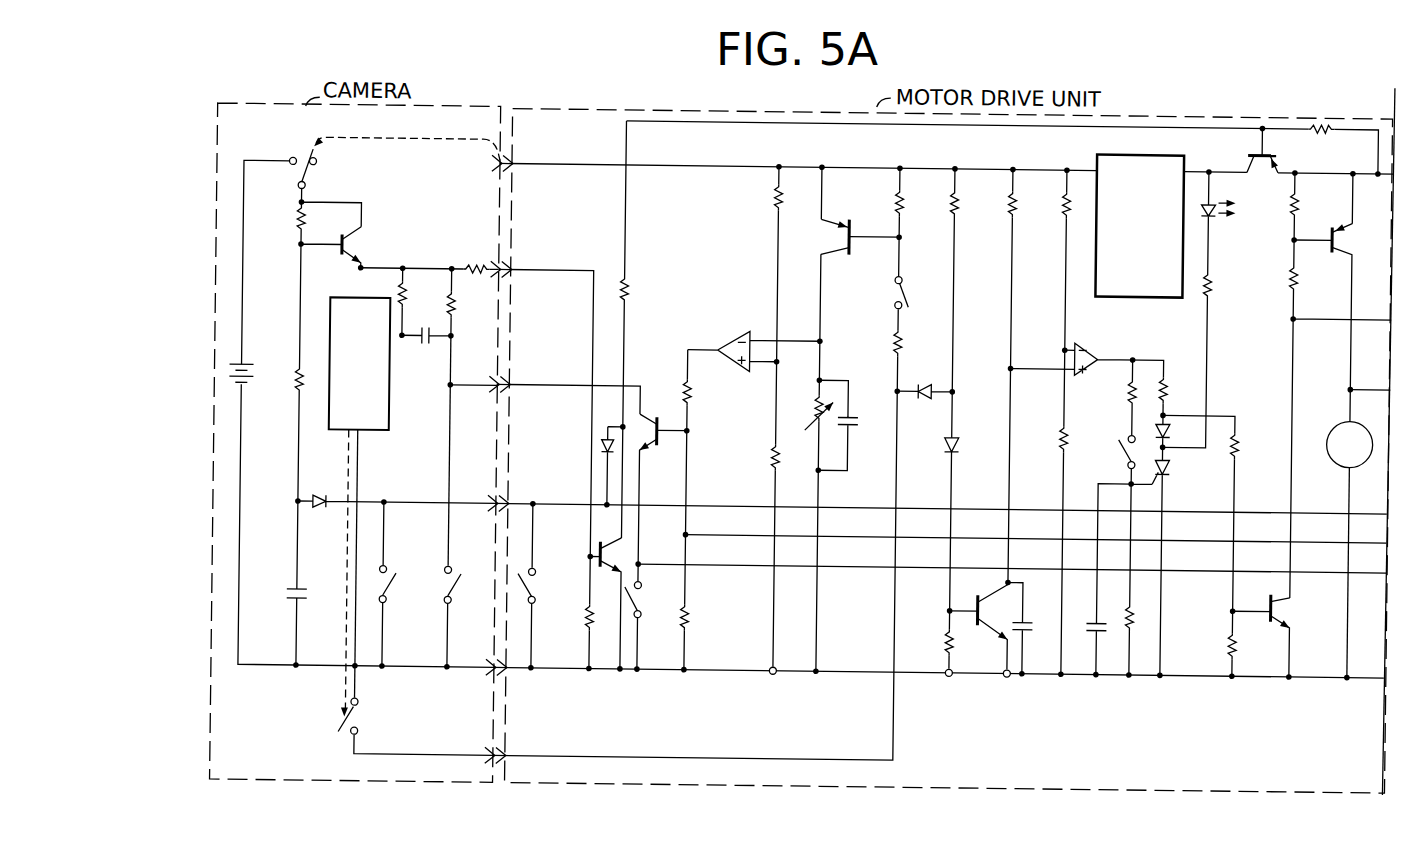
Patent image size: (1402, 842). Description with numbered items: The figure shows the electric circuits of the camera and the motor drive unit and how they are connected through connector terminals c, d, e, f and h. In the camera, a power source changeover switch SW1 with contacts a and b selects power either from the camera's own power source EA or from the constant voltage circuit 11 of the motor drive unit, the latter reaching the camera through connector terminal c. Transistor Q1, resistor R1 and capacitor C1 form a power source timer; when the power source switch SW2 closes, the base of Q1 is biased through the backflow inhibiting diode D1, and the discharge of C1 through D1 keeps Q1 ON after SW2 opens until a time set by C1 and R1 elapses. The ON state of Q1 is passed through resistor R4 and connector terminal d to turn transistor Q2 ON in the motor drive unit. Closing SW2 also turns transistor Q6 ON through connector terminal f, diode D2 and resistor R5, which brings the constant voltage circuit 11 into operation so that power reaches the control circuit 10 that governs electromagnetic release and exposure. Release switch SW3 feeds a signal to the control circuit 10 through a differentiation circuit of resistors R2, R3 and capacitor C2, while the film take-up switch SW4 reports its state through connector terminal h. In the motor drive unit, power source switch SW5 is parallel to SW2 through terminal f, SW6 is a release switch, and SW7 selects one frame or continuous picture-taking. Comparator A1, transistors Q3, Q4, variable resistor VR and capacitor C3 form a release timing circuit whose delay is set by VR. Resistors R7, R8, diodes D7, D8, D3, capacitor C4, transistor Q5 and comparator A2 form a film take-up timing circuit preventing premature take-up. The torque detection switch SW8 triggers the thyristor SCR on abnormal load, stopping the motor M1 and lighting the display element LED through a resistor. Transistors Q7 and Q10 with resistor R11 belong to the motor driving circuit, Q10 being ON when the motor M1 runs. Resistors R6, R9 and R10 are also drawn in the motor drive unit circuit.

The contact of power source changeover switch a is at (320, 152).
The contact of power source changeover switch b is at (288, 149).
The connector terminal c is at (492, 172).
The connector terminal d is at (496, 276).
The connector terminal e is at (492, 388).
The connector terminal f is at (494, 494).
The connector terminal h is at (492, 748).
The power source changeover switch SW1 is at (314, 180).
The transistor Q1 is at (366, 245).
The resistor R1 is at (298, 381).
The resistor R2 is at (407, 301).
The resistor R3 is at (458, 318).
The resistor R4 is at (475, 262).
The capacitor C2 is at (428, 345).
The control circuit 10 is at (392, 407).
The power source EA is at (256, 362).
The backflow inhibiting diode D1 is at (325, 494).
The capacitor C1 is at (290, 596).
The power source switch SW2 is at (390, 562).
The release switch SW3 is at (455, 562).
The film take-up switch SW4 is at (367, 723).
The resistor R5 is at (630, 285).
The diode D2 is at (603, 443).
The transistor Q2 is at (606, 605).
The transistor Q3 is at (663, 410).
The power source switch SW5 is at (565, 558).
The release switch SW6 is at (647, 583).
The comparator A1 is at (728, 329).
The variable resistor VR is at (814, 398).
The capacitor C3 is at (857, 408).
The transistor Q4 is at (849, 250).
The selection switch SW7 is at (894, 294).
The resistor R6 is at (894, 340).
The diode D7 is at (922, 377).
The diode D8 is at (960, 435).
The resistor R7 is at (960, 200).
The resistor R8 is at (1019, 200).
The comparator A2 is at (1092, 333).
The constant voltage circuit 11 is at (1143, 288).
The torque detection switch SW8 is at (1130, 423).
The resistor R9 is at (1170, 364).
The diode D3 is at (1174, 419).
The thyristor SCR is at (1171, 464).
The resistor R10 is at (1243, 434).
The transistor Q5 is at (990, 620).
The capacitor C4 is at (1031, 612).
The transistor Q6 is at (1263, 168).
The display element LED is at (1222, 210).
The resistor R11 is at (1287, 266).
The transistor Q7 is at (1330, 248).
The motor M1 is at (1348, 550).
The transistor Q10 is at (1289, 602).